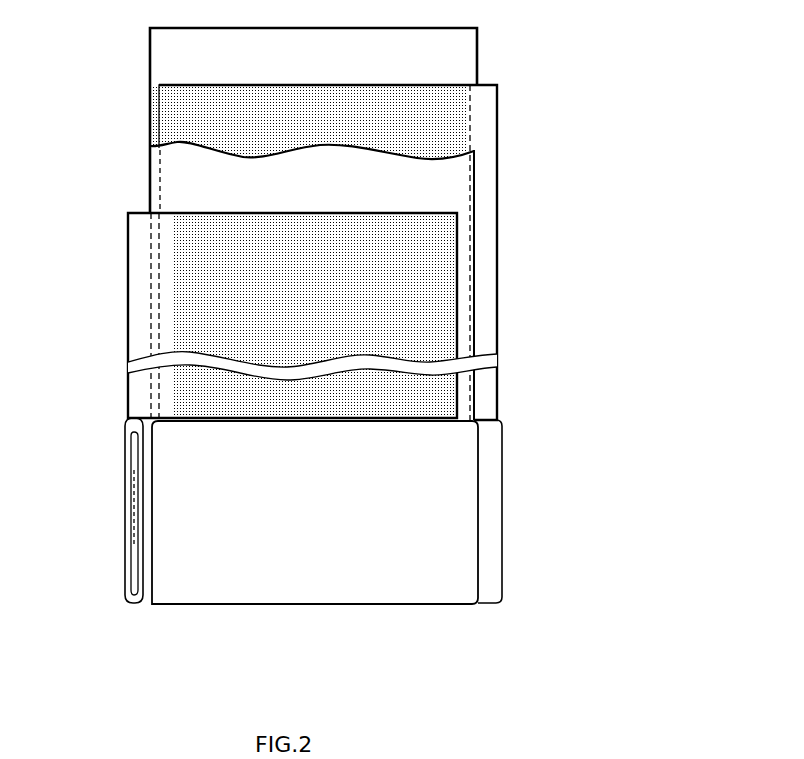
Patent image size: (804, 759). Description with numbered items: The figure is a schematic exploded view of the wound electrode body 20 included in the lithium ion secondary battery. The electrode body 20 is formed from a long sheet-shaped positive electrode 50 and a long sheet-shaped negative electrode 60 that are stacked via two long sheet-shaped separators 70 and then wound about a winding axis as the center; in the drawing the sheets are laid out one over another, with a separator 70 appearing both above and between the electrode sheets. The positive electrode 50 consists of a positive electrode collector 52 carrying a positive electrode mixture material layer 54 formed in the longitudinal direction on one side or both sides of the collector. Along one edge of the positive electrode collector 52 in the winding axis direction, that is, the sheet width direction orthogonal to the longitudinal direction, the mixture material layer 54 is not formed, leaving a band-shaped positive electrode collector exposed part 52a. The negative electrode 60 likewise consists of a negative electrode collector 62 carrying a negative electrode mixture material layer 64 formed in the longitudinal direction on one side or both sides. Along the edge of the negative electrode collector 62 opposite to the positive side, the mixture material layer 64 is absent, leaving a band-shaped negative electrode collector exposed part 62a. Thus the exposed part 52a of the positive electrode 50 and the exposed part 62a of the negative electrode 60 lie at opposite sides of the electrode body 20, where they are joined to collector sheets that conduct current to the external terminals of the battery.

The electrode body 20 is at (397, 583).
The positive electrode 50 is at (243, 315).
The positive electrode collector 52 is at (128, 348).
The positive electrode collector exposed part 52a is at (138, 318).
The positive electrode mixture material layer 54 is at (188, 232).
The negative electrode 60 is at (380, 344).
The negative electrode collector 62 is at (498, 260).
The negative electrode collector exposed part 62a is at (486, 208).
The negative electrode mixture material layer 64 is at (465, 108).
The separator 70 is at (166, 57).